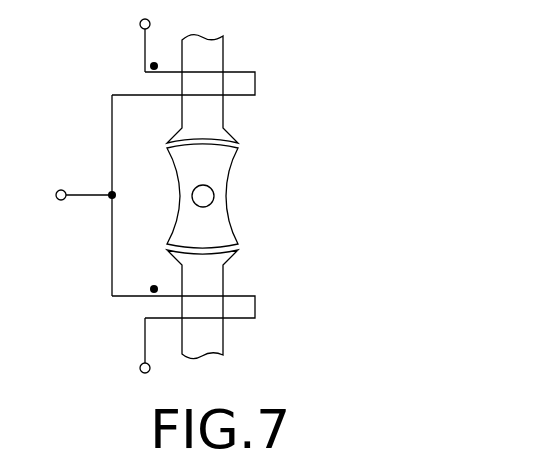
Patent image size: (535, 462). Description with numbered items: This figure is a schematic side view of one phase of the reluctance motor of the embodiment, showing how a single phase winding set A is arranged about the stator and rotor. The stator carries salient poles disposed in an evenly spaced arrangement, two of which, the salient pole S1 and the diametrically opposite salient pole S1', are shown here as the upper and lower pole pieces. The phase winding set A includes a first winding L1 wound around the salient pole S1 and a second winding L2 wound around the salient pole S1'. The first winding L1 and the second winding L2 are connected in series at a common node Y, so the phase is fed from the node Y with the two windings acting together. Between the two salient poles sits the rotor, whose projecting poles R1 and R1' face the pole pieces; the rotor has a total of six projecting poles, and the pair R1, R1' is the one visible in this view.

The phase winding set A is at (297, 60).
The projecting pole R1 is at (234, 173).
The projecting pole R1' is at (238, 222).
The first winding L1 is at (204, 86).
The second winding L2 is at (204, 311).
The salient pole S1 is at (129, 38).
The salient pole S1' is at (129, 334).
The node Y is at (71, 195).